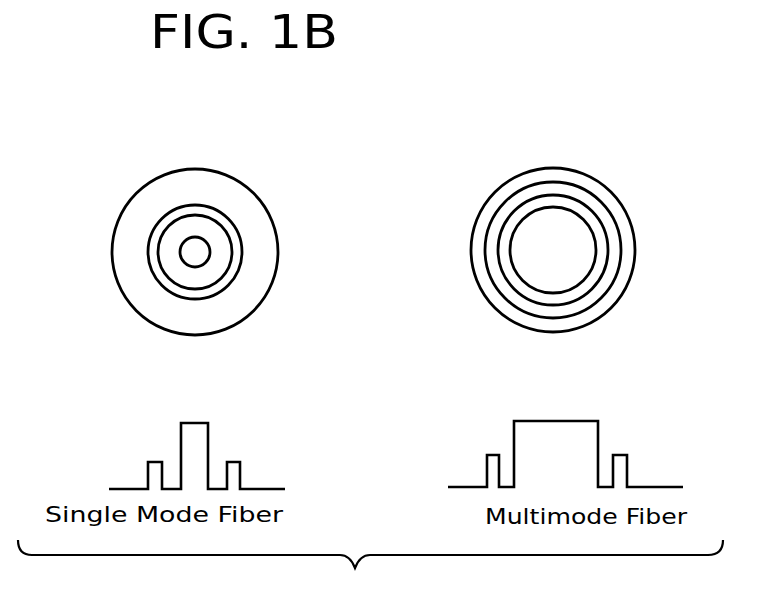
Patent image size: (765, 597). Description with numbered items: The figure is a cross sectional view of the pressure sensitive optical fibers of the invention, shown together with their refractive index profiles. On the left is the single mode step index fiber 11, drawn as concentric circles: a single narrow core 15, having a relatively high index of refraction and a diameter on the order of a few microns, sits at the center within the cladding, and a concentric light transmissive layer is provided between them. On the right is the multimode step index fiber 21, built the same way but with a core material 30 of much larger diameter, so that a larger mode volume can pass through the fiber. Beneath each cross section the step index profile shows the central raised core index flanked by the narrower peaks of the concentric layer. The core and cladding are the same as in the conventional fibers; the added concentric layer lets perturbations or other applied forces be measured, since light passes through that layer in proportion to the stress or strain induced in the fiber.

The single mode pressure sensitive fiber 11 is at (166, 258).
The core 15 is at (203, 250).
The multimode step index fiber 21 is at (566, 269).
The core material 30 is at (568, 282).